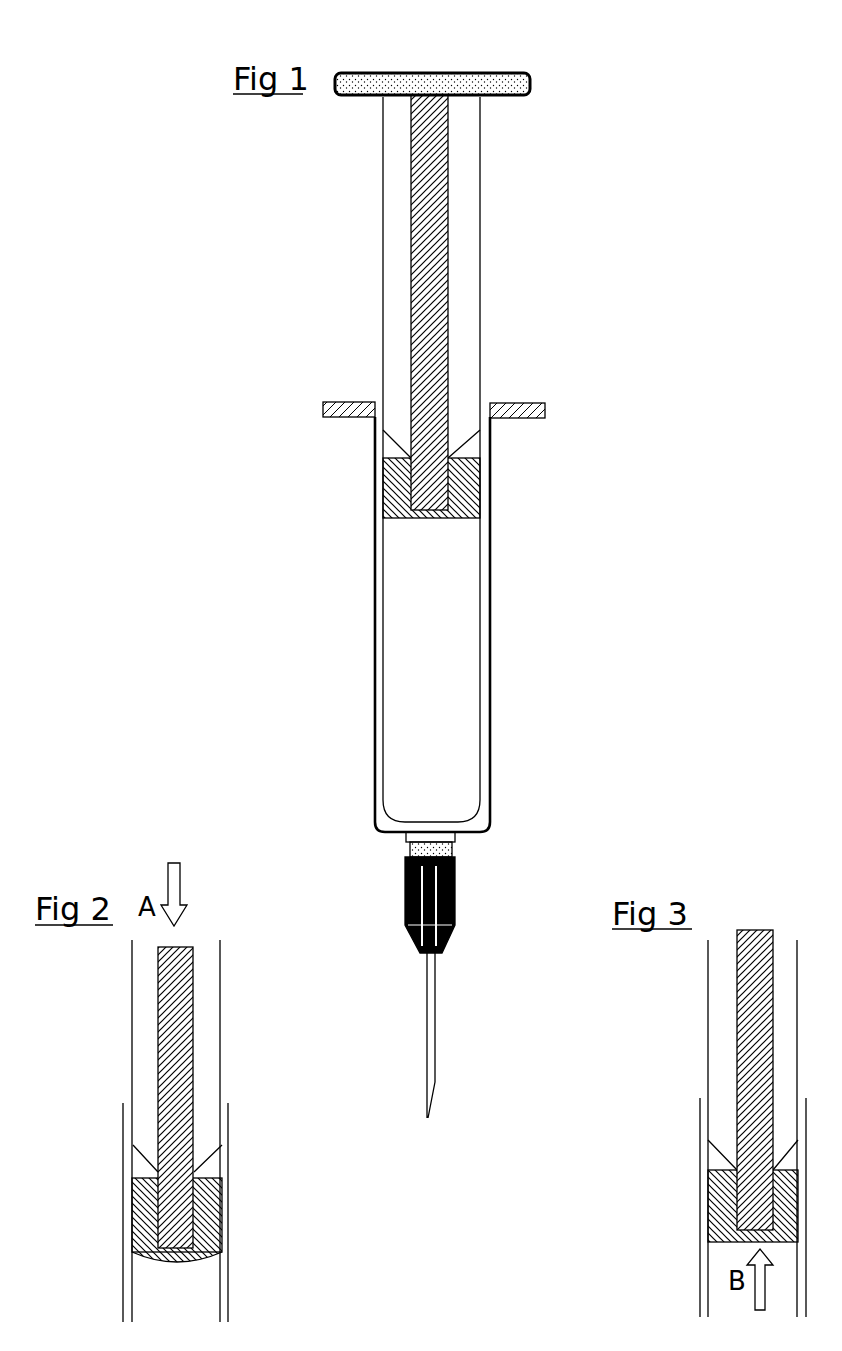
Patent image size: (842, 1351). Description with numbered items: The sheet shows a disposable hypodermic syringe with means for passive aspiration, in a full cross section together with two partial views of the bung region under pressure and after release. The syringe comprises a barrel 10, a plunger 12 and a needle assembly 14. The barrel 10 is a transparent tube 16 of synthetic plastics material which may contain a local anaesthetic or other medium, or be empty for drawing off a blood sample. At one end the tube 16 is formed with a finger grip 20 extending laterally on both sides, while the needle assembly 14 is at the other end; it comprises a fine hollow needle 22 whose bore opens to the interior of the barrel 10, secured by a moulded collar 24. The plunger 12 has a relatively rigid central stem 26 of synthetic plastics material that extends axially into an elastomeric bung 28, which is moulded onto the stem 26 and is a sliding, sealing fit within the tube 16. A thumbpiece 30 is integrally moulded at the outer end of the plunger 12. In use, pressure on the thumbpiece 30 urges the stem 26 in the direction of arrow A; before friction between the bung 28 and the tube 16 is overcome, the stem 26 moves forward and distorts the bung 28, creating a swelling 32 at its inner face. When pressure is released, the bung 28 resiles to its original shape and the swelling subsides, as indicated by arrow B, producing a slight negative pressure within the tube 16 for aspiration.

In FIG. 1, the barrel 10 is at (325, 565).
In FIG. 1, the plunger 12 is at (363, 280).
In FIG. 1, the needle assembly 14 is at (415, 977).
In FIG. 1, the transparent tube 16 is at (487, 590).
In FIG. 2, the transparent tube 16 is at (228, 1160).
In FIG. 3, the transparent tube 16 is at (700, 1130).
In FIG. 1, the finger grip 20 is at (538, 402).
In FIG. 1, the needle 22 is at (435, 997).
In FIG. 1, the moulded collar 24 is at (453, 888).
In FIG. 1, the stem 26 is at (445, 230).
In FIG. 2, the stem 26 is at (193, 1053).
In FIG. 3, the stem 26 is at (740, 1078).
In FIG. 1, the bung 28 is at (480, 480).
In FIG. 2, the bung 28 is at (203, 1228).
In FIG. 3, the bung 28 is at (727, 1218).
In FIG. 1, the thumbpiece 30 is at (523, 73).
In FIG. 2, the swelling 32 is at (187, 1262).